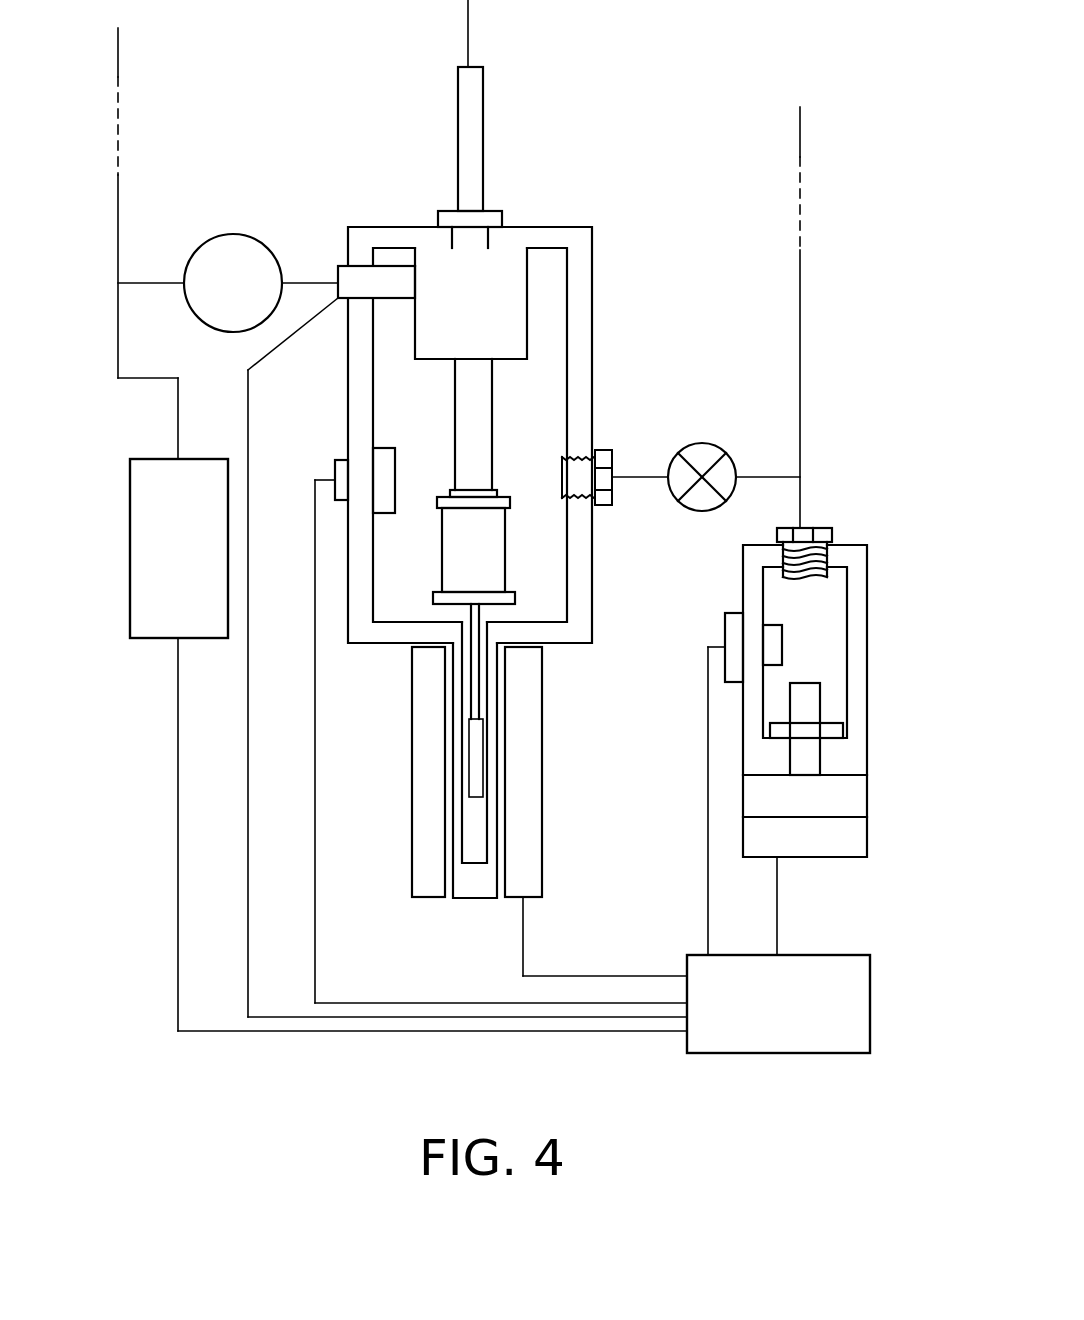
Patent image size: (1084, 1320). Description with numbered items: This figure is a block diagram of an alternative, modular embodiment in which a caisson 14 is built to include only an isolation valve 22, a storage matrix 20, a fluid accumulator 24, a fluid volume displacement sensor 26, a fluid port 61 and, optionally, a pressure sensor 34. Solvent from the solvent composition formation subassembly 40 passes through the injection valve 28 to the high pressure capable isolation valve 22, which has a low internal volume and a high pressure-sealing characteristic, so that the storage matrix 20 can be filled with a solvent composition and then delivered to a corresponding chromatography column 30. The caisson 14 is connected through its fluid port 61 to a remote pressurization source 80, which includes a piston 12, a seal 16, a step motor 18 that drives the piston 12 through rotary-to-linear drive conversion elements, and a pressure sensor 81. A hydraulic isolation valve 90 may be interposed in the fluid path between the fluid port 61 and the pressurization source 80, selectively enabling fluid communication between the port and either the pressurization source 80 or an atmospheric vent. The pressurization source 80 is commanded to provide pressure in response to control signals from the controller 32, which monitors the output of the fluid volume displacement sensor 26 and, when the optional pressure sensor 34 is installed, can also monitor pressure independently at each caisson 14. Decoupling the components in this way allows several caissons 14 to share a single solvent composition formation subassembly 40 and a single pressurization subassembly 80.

The piston 12 is at (805, 693).
The caisson 14 is at (594, 243).
The seal 16 is at (785, 730).
The step motor 18 is at (805, 838).
The storage matrix 20 is at (470, 418).
The isolation valve 22 is at (471, 293).
The fluid accumulator 24 is at (474, 547).
The fluid volume displacement sensor 26 is at (523, 760).
The injection valve 28 is at (240, 234).
The chromatography column 30 is at (470, 135).
The controller 32 is at (778, 1004).
The pressure sensor 34 is at (335, 465).
The solvent composition formation subassembly 40 is at (179, 548).
The fluid port 61 is at (612, 497).
The remote pressurization source 80 is at (840, 545).
The pressure sensor 81 is at (725, 627).
The hydraulic isolation valve 90 is at (700, 443).